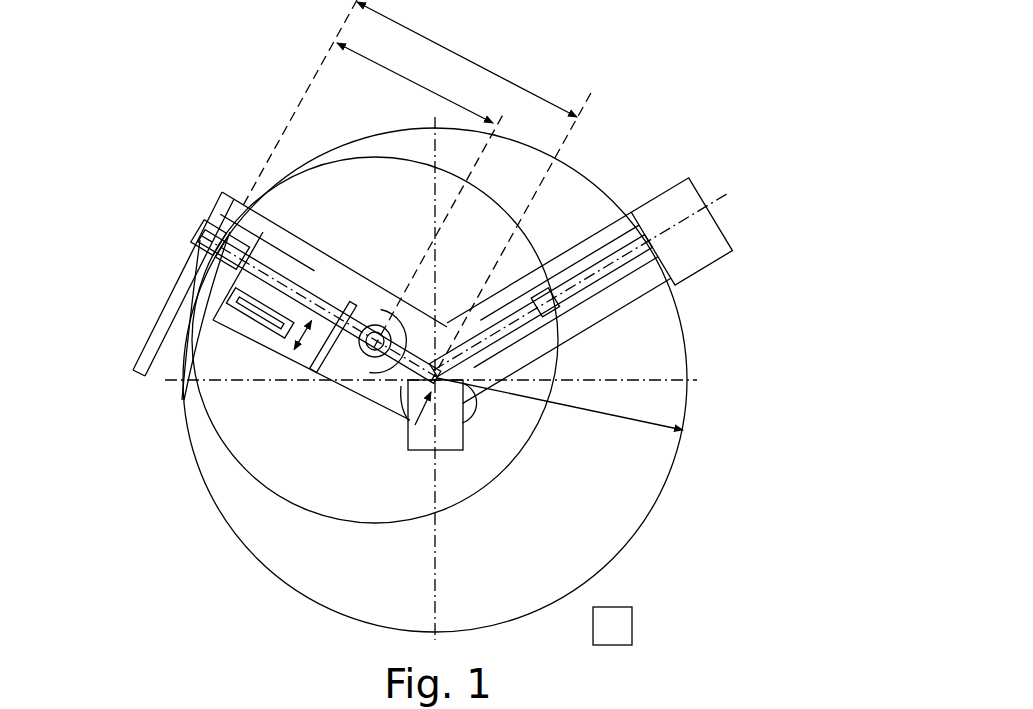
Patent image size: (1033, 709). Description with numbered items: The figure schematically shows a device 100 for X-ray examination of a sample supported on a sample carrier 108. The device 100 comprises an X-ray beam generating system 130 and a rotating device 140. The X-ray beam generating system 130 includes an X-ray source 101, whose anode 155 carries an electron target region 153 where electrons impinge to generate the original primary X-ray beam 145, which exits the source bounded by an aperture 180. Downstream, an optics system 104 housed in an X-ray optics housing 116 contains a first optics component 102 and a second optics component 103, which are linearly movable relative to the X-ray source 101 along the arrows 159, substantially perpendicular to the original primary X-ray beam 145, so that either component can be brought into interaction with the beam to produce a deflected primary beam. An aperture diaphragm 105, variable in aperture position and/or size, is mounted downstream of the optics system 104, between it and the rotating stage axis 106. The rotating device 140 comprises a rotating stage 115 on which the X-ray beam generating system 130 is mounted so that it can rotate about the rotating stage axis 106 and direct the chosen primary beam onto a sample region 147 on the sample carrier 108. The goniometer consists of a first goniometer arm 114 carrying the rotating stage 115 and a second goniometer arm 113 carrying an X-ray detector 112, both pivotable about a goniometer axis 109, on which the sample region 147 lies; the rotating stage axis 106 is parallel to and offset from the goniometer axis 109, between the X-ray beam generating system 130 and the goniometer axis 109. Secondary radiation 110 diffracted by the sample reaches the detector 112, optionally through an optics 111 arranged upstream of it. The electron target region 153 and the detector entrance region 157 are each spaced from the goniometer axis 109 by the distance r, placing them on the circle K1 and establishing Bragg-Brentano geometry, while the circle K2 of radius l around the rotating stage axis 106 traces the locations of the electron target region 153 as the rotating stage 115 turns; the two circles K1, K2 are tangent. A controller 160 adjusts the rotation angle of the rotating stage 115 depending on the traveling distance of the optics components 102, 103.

The device 100 is at (752, 58).
The X-ray source 101 is at (210, 218).
The first optics component 102 is at (256, 313).
The second optics component 103 is at (200, 358).
The optics system 104 is at (243, 343).
The aperture diaphragm 105 is at (368, 376).
The rotating stage axis 106 is at (404, 396).
The sample carrier 108 is at (427, 452).
The goniometer axis 109 is at (462, 345).
The secondary radiation 110 is at (483, 340).
The optics 111 is at (617, 288).
The X-ray detector 112 is at (683, 220).
The second goniometer arm 113 is at (512, 312).
The first goniometer arm 114 is at (372, 328).
The rotating stage 115 is at (284, 272).
The X-ray optics housing 116 is at (262, 228).
The X-ray beam generating system 130 is at (166, 122).
The rotating device 140 is at (404, 266).
The original primary X-ray beam 145 is at (290, 305).
The sample region 147 is at (441, 422).
The electron target region 153 is at (212, 257).
The anode 155 is at (225, 228).
The detector entrance region 157 is at (615, 243).
The arrows 159 is at (312, 362).
The controller 160 is at (633, 626).
The aperture 180 is at (255, 268).
The circle K1 is at (675, 467).
The circle K2 is at (372, 525).